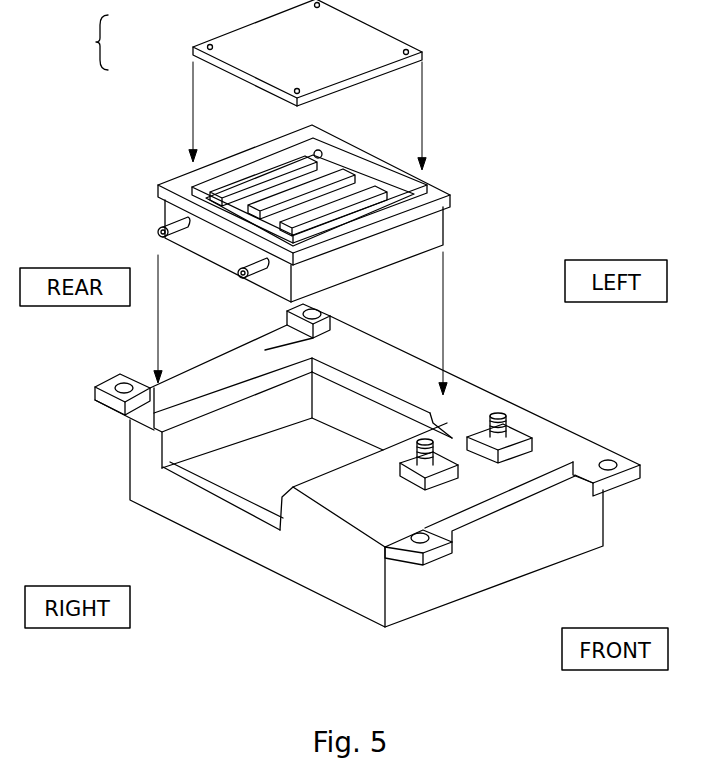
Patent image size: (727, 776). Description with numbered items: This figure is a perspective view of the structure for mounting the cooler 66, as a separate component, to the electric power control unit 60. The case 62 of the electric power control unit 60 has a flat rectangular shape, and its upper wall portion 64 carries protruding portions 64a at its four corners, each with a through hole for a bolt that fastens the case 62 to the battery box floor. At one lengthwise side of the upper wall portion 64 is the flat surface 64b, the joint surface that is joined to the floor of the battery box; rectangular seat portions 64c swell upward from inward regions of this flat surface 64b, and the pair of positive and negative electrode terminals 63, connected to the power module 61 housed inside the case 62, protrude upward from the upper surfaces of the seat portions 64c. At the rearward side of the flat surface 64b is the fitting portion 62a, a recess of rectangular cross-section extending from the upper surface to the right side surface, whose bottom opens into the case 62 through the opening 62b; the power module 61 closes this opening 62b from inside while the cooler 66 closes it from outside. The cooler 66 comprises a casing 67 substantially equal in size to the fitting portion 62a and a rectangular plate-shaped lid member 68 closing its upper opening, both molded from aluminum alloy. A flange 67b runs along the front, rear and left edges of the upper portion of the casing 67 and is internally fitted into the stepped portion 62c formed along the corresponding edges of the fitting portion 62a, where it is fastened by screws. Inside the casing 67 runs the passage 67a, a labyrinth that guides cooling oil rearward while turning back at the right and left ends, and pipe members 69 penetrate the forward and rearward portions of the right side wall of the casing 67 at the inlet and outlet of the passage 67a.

The electric power control unit 60 is at (497, 115).
The power module 61 is at (323, 437).
The case 62 is at (333, 449).
The fitting portion 62a is at (200, 448).
The opening 62b is at (262, 502).
The stepped portion 62c is at (203, 407).
The electrode terminals 63 is at (497, 412).
The upper wall portion 64 is at (346, 460).
The protruding portions 64a is at (110, 380).
The flat surface 64b is at (457, 445).
The seat portions 64c is at (410, 473).
The cooler 66 is at (92, 42).
The casing 67 is at (301, 182).
The passage 67a is at (353, 182).
The flange 67b is at (244, 145).
The lid member 68 is at (241, 33).
The pipe members 69 is at (157, 231).